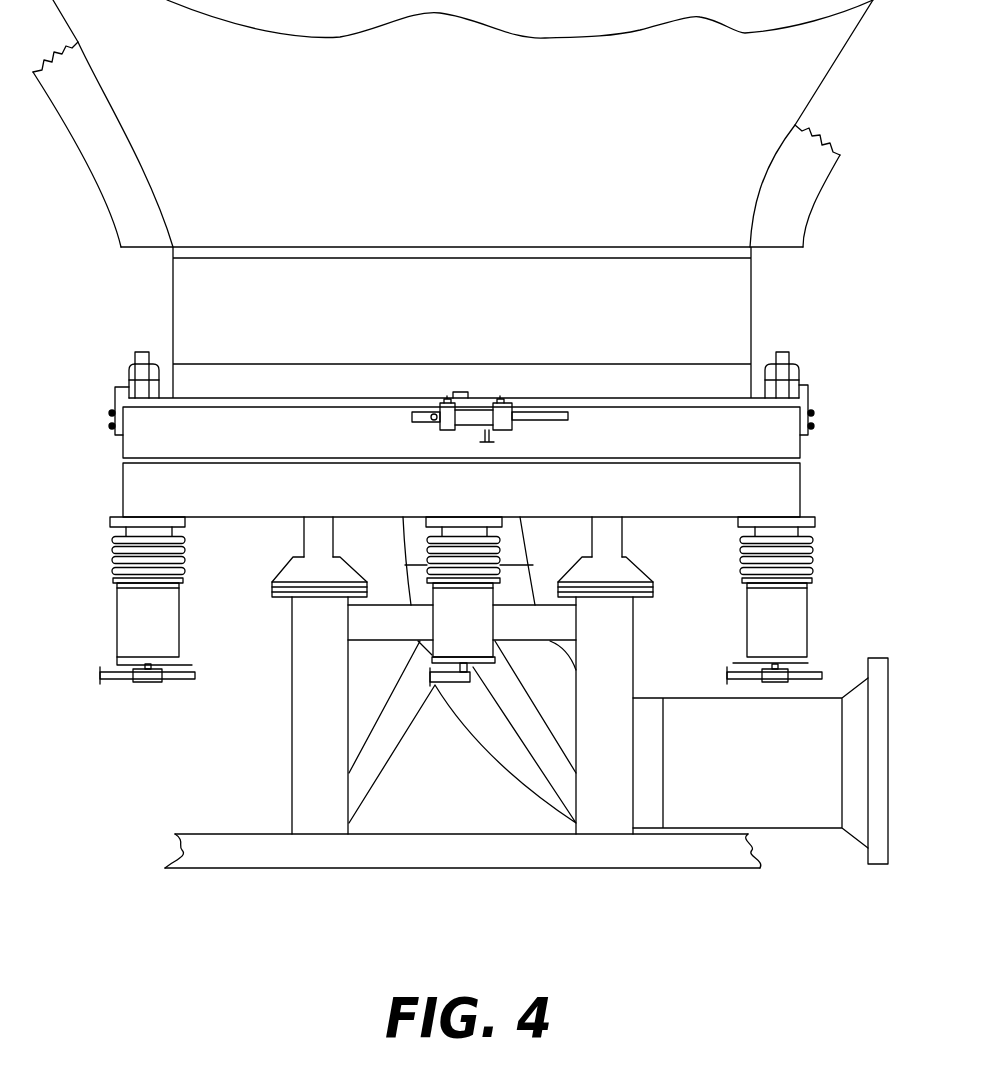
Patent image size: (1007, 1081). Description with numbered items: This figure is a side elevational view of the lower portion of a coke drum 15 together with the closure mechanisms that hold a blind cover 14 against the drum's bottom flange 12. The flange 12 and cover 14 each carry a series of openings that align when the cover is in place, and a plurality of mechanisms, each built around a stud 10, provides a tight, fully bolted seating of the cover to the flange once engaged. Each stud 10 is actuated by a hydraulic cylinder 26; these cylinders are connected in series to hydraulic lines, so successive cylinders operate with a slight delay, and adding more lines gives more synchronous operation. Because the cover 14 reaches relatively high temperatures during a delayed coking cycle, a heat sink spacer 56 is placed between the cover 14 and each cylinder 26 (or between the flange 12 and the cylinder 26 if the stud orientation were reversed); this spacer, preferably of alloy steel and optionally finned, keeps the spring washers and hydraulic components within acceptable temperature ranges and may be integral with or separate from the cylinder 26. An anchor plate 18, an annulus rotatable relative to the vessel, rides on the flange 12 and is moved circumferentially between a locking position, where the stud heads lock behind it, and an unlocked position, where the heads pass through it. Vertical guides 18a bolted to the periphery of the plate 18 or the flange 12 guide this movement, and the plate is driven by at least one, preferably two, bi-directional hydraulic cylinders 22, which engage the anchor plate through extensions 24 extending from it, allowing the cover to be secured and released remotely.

The stud 10 is at (140, 350).
The flange 12 is at (758, 438).
The cover 14 is at (775, 505).
The coke drum 15 is at (578, 158).
The anchor plate 18 is at (118, 398).
The vertical guides 18a is at (813, 415).
The hydraulic cylinder 22 is at (478, 418).
The extensions 24 is at (417, 417).
The hydraulic cylinder 26 is at (127, 615).
The heat sink spacer 56 is at (110, 557).